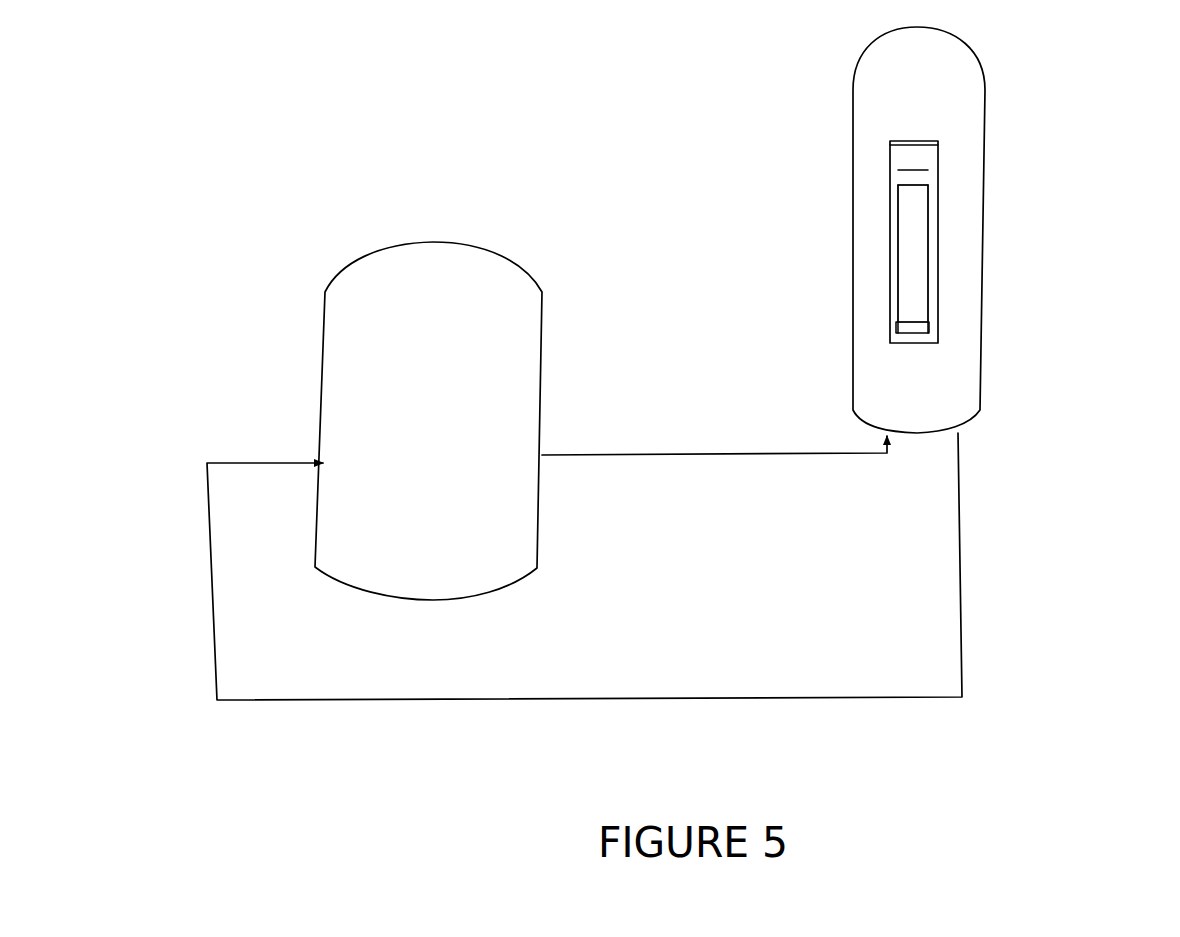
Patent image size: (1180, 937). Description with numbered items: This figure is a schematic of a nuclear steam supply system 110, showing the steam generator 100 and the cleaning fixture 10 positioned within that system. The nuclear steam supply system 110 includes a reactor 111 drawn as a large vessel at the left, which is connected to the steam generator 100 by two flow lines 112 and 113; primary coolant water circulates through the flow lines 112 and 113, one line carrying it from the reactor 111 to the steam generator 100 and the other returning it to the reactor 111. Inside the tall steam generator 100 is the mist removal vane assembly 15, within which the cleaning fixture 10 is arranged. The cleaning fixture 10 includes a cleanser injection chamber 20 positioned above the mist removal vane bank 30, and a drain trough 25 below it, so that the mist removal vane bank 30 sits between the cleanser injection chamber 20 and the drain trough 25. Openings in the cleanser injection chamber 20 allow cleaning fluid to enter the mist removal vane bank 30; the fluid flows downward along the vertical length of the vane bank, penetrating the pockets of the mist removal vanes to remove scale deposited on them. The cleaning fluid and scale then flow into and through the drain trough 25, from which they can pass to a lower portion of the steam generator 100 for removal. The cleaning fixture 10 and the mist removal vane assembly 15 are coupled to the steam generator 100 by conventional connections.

The cleaning fixture 10 is at (897, 162).
The mist removal vane assembly 15 is at (938, 198).
The cleanser injection chamber 20 is at (920, 157).
The drain trough 25 is at (917, 329).
The mist removal vane bank 30 is at (916, 242).
The steam generator 100 is at (983, 206).
The nuclear steam supply system 110 is at (1168, 553).
The reactor 111 is at (547, 367).
The flow line 112 is at (714, 463).
The flow line 113 is at (584, 586).